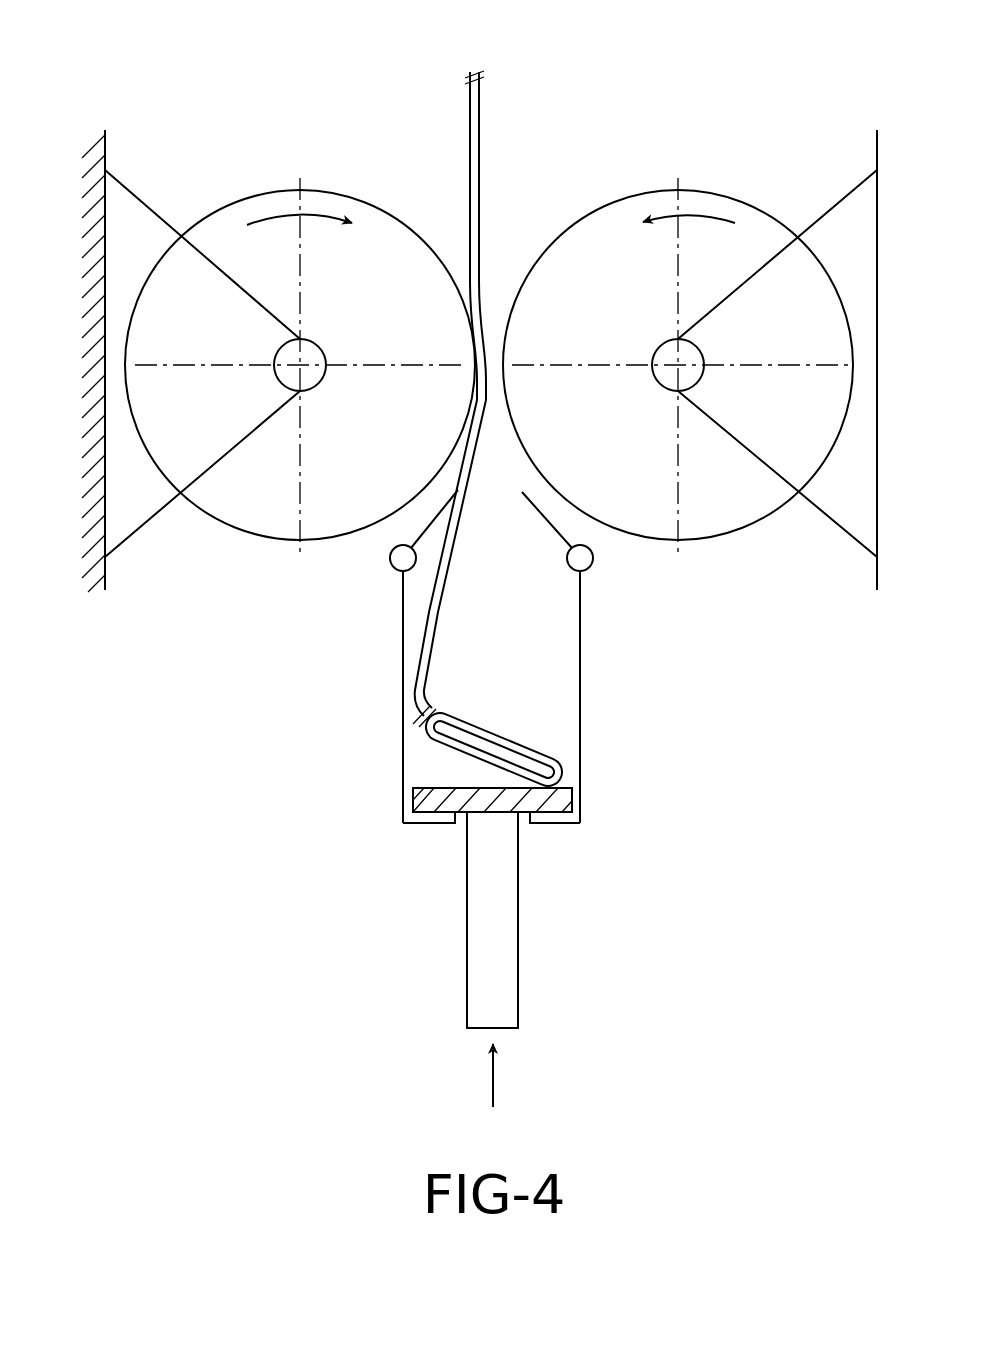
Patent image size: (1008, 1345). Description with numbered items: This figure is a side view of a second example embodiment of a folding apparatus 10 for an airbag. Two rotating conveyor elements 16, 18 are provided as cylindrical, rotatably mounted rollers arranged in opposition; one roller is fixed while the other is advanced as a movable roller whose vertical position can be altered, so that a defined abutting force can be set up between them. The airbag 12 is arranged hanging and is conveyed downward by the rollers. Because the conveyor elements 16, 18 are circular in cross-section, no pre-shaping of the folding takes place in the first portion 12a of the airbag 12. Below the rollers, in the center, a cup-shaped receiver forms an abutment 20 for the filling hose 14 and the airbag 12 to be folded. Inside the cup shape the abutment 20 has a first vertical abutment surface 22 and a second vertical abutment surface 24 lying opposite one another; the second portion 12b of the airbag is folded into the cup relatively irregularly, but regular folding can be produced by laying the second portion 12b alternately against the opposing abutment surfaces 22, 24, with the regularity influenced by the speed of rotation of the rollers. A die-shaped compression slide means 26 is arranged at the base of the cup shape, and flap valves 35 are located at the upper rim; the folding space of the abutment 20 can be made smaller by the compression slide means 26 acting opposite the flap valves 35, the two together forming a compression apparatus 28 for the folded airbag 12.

The folding apparatus 10 is at (156, 116).
The airbag 12 is at (484, 136).
The first portion of the airbag 12a is at (484, 312).
The second portion of the airbag 12b is at (433, 590).
The filling hose 14 is at (536, 749).
The rotating conveyor element 16 is at (223, 505).
The rotating conveyor element 18 is at (766, 518).
The abutment 20 is at (396, 696).
The first vertical abutment surface 22 is at (408, 766).
The second vertical abutment surface 24 is at (580, 705).
The die-shaped compression slide means 26 is at (519, 948).
The compression apparatus 28 is at (444, 880).
The flap valves 35 is at (589, 548).